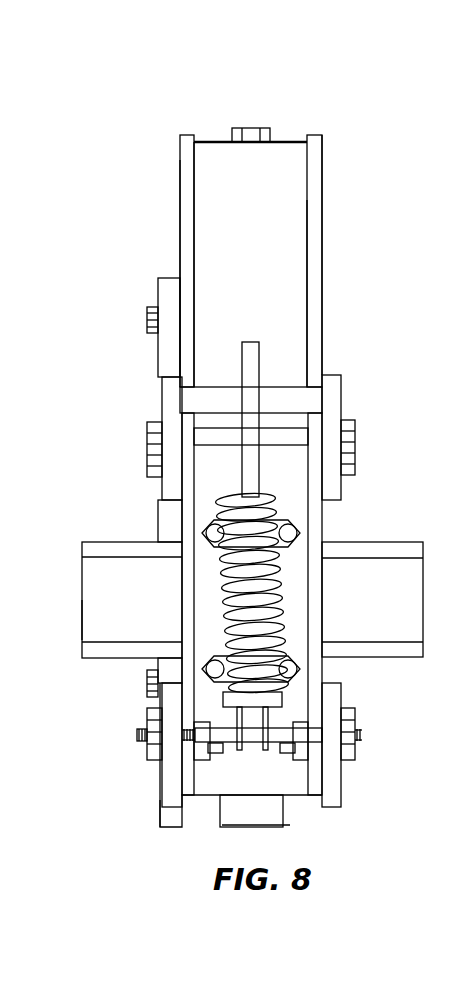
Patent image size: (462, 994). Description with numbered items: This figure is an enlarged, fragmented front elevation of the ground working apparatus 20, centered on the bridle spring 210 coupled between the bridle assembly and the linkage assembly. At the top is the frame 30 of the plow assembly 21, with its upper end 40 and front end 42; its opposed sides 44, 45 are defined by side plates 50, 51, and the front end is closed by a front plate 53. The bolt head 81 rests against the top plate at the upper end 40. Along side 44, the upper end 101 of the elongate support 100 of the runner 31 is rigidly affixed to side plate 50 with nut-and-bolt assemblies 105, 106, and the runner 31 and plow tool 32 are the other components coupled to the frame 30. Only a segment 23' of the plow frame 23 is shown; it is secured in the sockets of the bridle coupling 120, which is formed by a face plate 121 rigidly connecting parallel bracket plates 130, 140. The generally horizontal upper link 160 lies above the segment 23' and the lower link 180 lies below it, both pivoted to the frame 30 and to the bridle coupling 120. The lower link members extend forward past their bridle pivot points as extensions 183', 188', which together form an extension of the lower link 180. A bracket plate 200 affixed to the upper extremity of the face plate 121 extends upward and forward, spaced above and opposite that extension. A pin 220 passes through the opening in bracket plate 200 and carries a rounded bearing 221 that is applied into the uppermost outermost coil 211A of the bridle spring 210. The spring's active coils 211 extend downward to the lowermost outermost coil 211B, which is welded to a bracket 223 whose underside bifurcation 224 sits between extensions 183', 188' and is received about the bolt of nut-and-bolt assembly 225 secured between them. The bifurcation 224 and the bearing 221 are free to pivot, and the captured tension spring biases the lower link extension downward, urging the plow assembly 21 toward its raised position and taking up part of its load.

The ground working apparatus 20 is at (362, 58).
The frame 30 is at (180, 133).
The upper end 40 is at (192, 133).
The bolt head 81 is at (252, 128).
The front end 42 is at (318, 217).
The front plate 53 is at (297, 188).
The side 45 is at (323, 248).
The side plate 51 is at (322, 283).
The side plate 50 is at (180, 185).
The side 44 is at (180, 227).
The upper end 101 is at (168, 360).
The nut-and-bolt assembly 105 is at (147, 322).
The upper link 160 is at (160, 400).
The bracket plate 200 is at (287, 432).
The pin 220 is at (255, 365).
The rounded bearing 221 is at (253, 473).
The face plate 121 is at (298, 458).
The bracket plate 130 is at (180, 513).
The plow frame 23 is at (108, 555).
The segment 23' is at (55, 641).
The bridle coupling 120 is at (323, 530).
The bracket plate 140 is at (323, 562).
The outermost coil 211A is at (272, 497).
The outermost coil 211B is at (285, 680).
The bridle spring 210 is at (298, 603).
The active coils 211 is at (222, 562).
The nut-and-bolt assembly 106 is at (147, 687).
The bracket 223 is at (273, 700).
The bifurcation 224 is at (262, 727).
The nut-and-bolt assembly 225 is at (352, 737).
The lower link 180 is at (345, 778).
The extension 183' is at (121, 750).
The extension 188' is at (375, 745).
The elongate support 100 is at (160, 813).
The runner 31 is at (160, 830).
The plow tool 32 is at (227, 828).
The plow assembly 21 is at (290, 828).